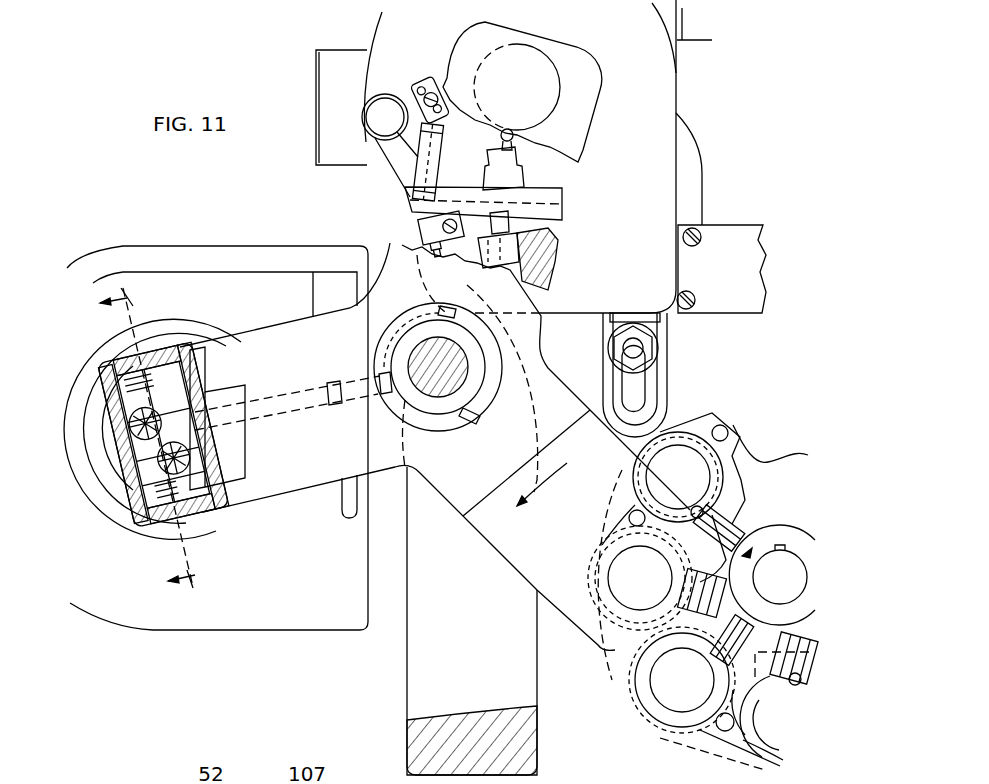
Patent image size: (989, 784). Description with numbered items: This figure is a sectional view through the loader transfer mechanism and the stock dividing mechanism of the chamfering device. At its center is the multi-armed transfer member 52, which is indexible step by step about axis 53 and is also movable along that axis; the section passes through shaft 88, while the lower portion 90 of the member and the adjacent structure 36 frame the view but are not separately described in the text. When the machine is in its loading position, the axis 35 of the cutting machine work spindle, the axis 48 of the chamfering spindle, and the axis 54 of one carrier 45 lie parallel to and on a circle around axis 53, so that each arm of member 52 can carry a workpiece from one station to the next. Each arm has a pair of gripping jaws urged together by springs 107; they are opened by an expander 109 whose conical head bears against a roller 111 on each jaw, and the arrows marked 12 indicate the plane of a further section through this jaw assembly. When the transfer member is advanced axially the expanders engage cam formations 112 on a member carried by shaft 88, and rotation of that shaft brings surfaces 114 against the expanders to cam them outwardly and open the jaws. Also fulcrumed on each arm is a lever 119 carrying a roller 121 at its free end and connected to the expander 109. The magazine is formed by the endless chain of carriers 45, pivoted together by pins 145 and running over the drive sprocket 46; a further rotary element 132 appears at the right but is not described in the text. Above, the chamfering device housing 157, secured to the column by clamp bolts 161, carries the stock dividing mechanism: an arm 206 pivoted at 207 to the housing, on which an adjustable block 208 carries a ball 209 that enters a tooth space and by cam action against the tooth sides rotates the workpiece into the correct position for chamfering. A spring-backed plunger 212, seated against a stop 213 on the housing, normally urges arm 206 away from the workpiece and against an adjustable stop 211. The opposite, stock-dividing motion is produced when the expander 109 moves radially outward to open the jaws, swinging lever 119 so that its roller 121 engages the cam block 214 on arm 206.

The axis 12 is at (132, 441).
The axis of cutting machine spindle 35 is at (205, 407).
The housing 36 is at (253, 290).
The carrier 45 is at (632, 695).
The drive sprocket 46 is at (762, 472).
The axis of chamfering spindle 48 is at (517, 87).
The transfer member 52 is at (300, 478).
The axis of transfer member 53 is at (443, 368).
The carrier axis 54 is at (640, 578).
The shaft 88 is at (428, 392).
The arm 90 is at (449, 637).
The spring 107 is at (147, 350).
The expander 109 is at (213, 437).
The roller 111 is at (148, 470).
The cam formation 112 is at (463, 323).
The cam surface 114 is at (382, 378).
The lever 119 is at (557, 244).
The roller 121 is at (488, 256).
The drive roller 132 is at (782, 556).
The pin 145 is at (630, 516).
The housing 157 is at (383, 48).
The clamp bolt 161 is at (643, 348).
The arm 206 is at (518, 187).
The pivot 207 is at (385, 125).
The block 208 is at (545, 190).
The ball 209 is at (515, 138).
The adjustable stop 211 is at (423, 207).
The spring-backed plunger 212 is at (437, 128).
The stop 213 is at (420, 90).
The cam block 214 is at (493, 218).